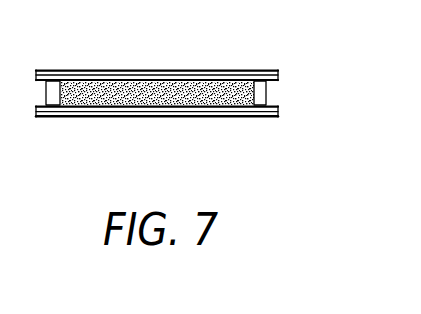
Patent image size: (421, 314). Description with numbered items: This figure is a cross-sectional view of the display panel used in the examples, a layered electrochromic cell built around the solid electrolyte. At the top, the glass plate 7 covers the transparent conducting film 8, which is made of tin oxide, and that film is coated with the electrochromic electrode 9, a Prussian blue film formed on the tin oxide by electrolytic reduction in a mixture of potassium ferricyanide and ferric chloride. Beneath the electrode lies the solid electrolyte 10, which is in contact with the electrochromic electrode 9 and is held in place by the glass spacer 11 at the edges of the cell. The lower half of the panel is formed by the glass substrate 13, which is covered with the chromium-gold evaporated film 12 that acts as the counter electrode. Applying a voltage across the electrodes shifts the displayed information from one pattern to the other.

The glass plate 7 is at (231, 70).
The transparent conducting film 8 is at (283, 74).
The electrochromic electrode 9 is at (193, 80).
The solid electrolyte 10 is at (208, 97).
The glass spacer 11 is at (266, 94).
The chromium-gold evaporated film 12 is at (280, 109).
The glass substrate 13 is at (257, 119).